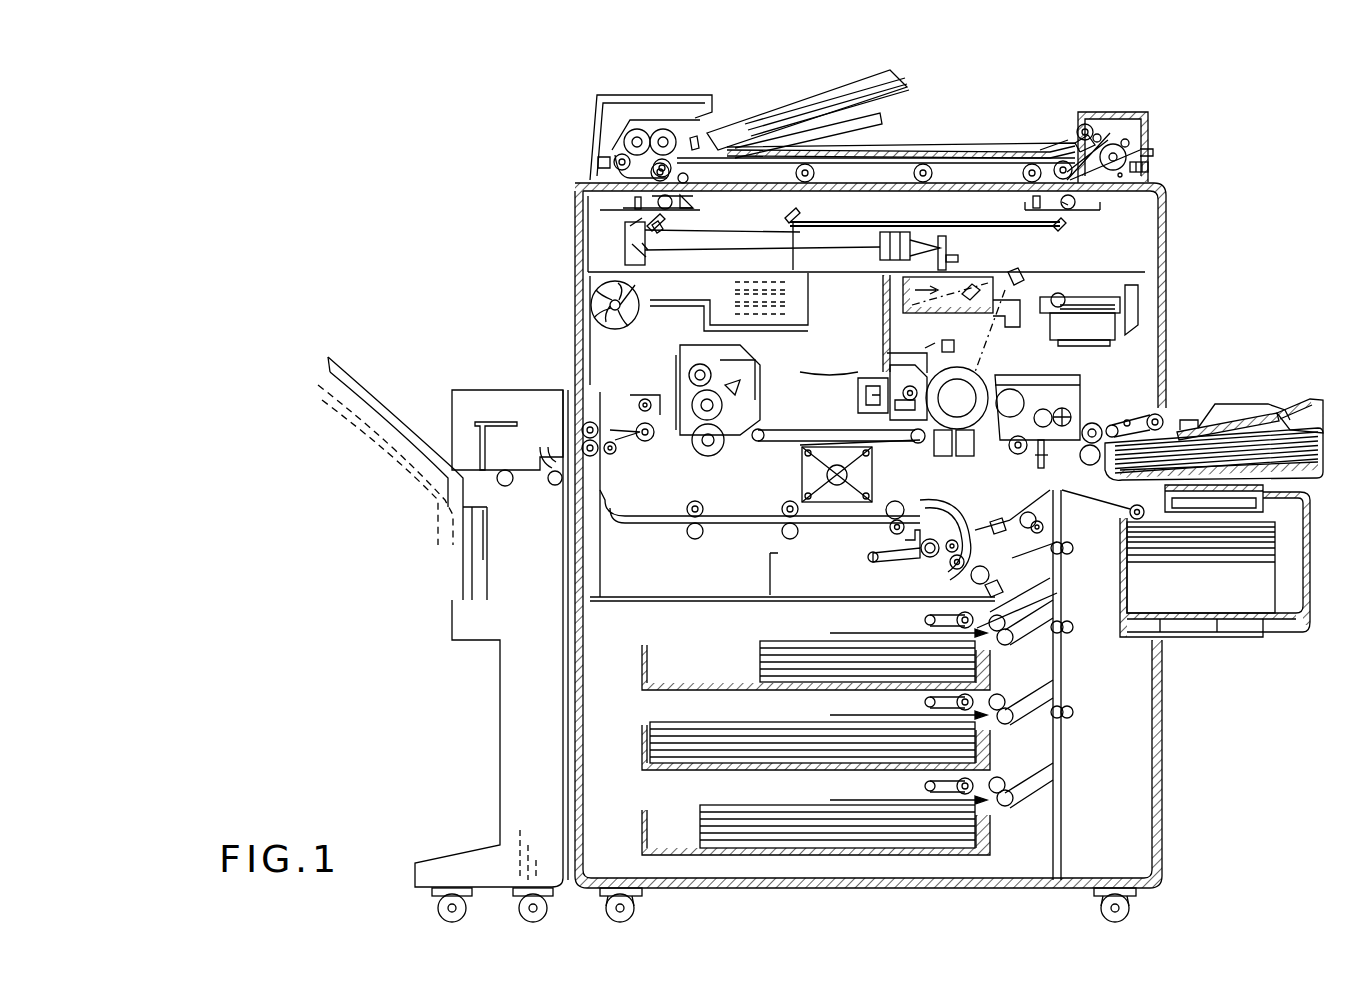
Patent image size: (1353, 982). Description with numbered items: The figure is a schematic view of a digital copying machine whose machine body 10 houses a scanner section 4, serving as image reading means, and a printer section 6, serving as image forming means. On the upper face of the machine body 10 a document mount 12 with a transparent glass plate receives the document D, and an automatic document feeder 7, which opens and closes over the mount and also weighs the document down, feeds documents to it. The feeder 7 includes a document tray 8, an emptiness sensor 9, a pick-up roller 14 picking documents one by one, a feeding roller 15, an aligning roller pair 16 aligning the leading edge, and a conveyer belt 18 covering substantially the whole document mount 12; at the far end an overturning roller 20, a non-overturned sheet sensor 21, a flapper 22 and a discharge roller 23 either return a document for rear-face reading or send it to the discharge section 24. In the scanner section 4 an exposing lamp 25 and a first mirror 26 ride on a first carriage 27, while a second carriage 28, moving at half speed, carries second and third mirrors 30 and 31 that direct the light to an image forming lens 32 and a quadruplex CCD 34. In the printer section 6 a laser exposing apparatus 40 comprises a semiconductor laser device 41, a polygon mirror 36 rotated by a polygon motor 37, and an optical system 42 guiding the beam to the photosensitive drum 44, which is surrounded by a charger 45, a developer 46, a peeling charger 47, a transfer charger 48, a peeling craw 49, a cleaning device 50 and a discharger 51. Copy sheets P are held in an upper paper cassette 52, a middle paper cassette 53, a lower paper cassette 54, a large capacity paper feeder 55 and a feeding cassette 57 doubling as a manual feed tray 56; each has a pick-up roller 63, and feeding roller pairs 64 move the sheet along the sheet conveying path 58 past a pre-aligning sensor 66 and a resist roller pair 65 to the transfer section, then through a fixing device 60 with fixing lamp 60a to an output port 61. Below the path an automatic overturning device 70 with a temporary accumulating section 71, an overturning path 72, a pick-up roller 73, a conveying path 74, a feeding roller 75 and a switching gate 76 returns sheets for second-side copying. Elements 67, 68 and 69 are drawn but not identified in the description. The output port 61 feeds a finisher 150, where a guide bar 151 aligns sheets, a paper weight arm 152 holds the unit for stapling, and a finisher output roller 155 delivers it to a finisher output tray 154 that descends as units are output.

The scanner section 4 is at (850, 222).
The printer section 6 is at (1085, 372).
The automatic document feeder 7 is at (762, 93).
The document tray 8 is at (786, 118).
The emptiness sensor 9 is at (690, 130).
The machine body 10 is at (1165, 760).
The document mount 12 is at (1000, 170).
The pick-up roller 14 is at (648, 132).
The feeding roller 15 is at (615, 155).
The aligning roller pair 16 is at (598, 164).
The conveyer belt 18 is at (875, 150).
The overturning roller 20 is at (1160, 154).
The non-overturned sheet sensor 21 is at (1150, 170).
The flapper 22 is at (1113, 145).
The discharge roller 23 is at (1082, 128).
The discharge section 24 is at (912, 145).
The exposing lamp 25 is at (697, 218).
The first mirror 26 is at (662, 231).
The first carriage 27 is at (632, 203).
The second carriage 28 is at (625, 228).
The second mirror 30 is at (627, 255).
The third mirror 31 is at (648, 262).
The image forming lens 32 is at (908, 240).
The quadruplex CCD 34 is at (950, 245).
The polygon mirror 36 is at (1100, 290).
The polygon motor 37 is at (1100, 328).
The laser exposing apparatus 40 is at (1150, 298).
The semiconductor laser device 41 is at (1058, 262).
The optical system 42 is at (895, 295).
The photosensitive drum 44 is at (980, 378).
The charger 45 is at (955, 355).
The developer 46 is at (1082, 390).
The peeling charger 47 is at (868, 488).
The transfer charger 48 is at (912, 520).
The peeling craw 49 is at (860, 432).
The cleaner 50 is at (884, 360).
The discharger 51 is at (918, 362).
The upper paper cassette 52 is at (645, 670).
The middle paper cassette 53 is at (645, 750).
The lower paper cassette 54 is at (645, 835).
The large capacity paper feeder 55 is at (1235, 618).
The manual feed tray 56 is at (1242, 425).
The feeding cassette 57 is at (1316, 398).
The sheet conveying path 58 is at (786, 420).
The fixing device 60 is at (735, 362).
The fixing lamp 60a is at (695, 372).
The output port 61 is at (585, 400).
The pick-up roller 63 is at (1162, 413).
The feeding roller pairs 64 is at (1093, 425).
The resist roller pair 65 is at (1008, 450).
The pre-aligning sensor 66 is at (1040, 468).
The roller 67 is at (765, 445).
The roller 68 is at (647, 443).
The fan 69 is at (600, 395).
The automatic overturning device 70 is at (628, 545).
The temporary accumulating section 71 is at (812, 575).
The overturning path 72 is at (665, 527).
The pick-up roller 73 is at (880, 562).
The conveying path 74 is at (1005, 525).
The feeding roller 75 is at (950, 568).
The switching gate 76 is at (635, 415).
The finisher 150 is at (452, 400).
The guide bar 151 is at (487, 420).
The paper weight arm 152 is at (556, 485).
The finisher output tray 154 is at (348, 375).
The finisher output roller 155 is at (506, 490).
The document D is at (885, 80).
The copy sheet P is at (770, 655).